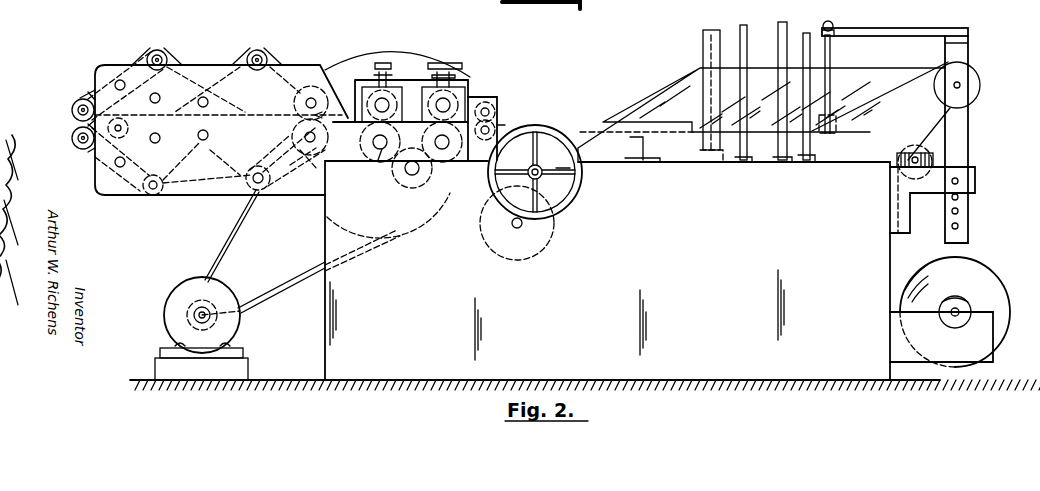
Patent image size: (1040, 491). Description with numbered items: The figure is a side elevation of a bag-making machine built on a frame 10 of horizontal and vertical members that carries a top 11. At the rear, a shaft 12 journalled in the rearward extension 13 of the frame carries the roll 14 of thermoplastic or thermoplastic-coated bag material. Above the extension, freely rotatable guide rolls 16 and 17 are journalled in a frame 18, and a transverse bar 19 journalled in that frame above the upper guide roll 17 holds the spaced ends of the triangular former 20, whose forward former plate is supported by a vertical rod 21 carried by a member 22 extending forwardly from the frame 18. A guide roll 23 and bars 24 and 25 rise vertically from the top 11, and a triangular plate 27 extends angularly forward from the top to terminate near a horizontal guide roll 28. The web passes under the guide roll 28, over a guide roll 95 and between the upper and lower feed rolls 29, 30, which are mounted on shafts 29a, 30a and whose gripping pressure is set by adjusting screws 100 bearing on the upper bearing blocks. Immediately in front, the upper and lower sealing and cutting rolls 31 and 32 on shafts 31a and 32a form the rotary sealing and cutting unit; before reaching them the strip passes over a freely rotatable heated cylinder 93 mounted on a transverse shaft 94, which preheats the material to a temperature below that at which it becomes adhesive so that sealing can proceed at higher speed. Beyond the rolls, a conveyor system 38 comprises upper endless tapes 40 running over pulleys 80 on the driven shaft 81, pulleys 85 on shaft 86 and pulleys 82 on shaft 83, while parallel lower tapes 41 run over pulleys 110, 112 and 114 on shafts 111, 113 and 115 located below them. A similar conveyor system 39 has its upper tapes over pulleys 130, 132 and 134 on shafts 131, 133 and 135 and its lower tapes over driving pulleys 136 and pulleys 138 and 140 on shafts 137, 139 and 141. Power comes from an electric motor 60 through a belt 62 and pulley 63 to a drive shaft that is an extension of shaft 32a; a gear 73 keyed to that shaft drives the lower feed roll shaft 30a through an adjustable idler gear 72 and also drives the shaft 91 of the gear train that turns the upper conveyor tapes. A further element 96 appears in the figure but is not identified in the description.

The frame 10 is at (607, 270).
The top 11 is at (754, 168).
The shaft 12 is at (962, 311).
The rearward extension 13 is at (988, 351).
The roll of bag material 14 is at (982, 272).
The guide roll 16 is at (909, 151).
The upper guide roll 17 is at (981, 84).
The frame 18 is at (968, 53).
The transverse bar 19 is at (942, 21).
The triangular shaped former 20 is at (717, 32).
The vertical rod 21 is at (831, 57).
The member 22 is at (862, 28).
The guide roll 23 is at (807, 32).
The bar 24 is at (783, 23).
The bar 25 is at (745, 26).
The triangular shaped plate 27 is at (647, 100).
The horizontally disposed guide roll 28 is at (571, 174).
The upper feed roll 29 is at (498, 68).
The shaft 29a is at (463, 105).
The lower feed roll 30 is at (444, 165).
The shaft 30a is at (436, 142).
The upper sealing and cutting roll 31 is at (392, 100).
The shaft 31a is at (381, 103).
The lower sealing and cutting roll 32 is at (380, 152).
The shaft 32a is at (376, 148).
The conveyor system 38 is at (232, 70).
The conveyor system 39 is at (185, 193).
The upper tapes 40 is at (276, 66).
The lower tapes 41 is at (228, 190).
The electric motor 60 is at (230, 297).
The belt 62 is at (283, 290).
The pulley 63 is at (398, 234).
The adjustable idler gear 72 is at (417, 178).
The gear 73 is at (372, 140).
The pulleys 80 is at (303, 100).
The driven shaft 81 is at (313, 102).
The pulleys 82 is at (197, 100).
The shaft 83 is at (197, 104).
The pulleys 85 is at (257, 50).
The shaft 86 is at (268, 54).
The shaft 91 is at (554, 134).
The heated cylinder 93 is at (528, 262).
The transverse shaft 94 is at (516, 230).
The guide roll 95 is at (495, 130).
The roller 96 is at (493, 102).
The adjusting screws 100 is at (451, 75).
The pulleys 110 is at (312, 195).
The shaft 111 is at (292, 148).
The pulleys 112 is at (258, 190).
The shaft 113 is at (255, 173).
The pulleys 114 is at (197, 140).
The shaft 115 is at (198, 134).
The pulleys 130 is at (213, 100).
The transverse shaft 131 is at (213, 103).
The pulleys 132 is at (165, 52).
The shaft 133 is at (152, 50).
The pulleys 134 is at (80, 100).
The shaft 135 is at (72, 110).
The driving pulleys 136 is at (210, 135).
The shaft 137 is at (225, 158).
The pulleys 138 is at (135, 195).
The shaft 139 is at (155, 193).
The pulleys 140 is at (78, 150).
The shaft 141 is at (72, 140).